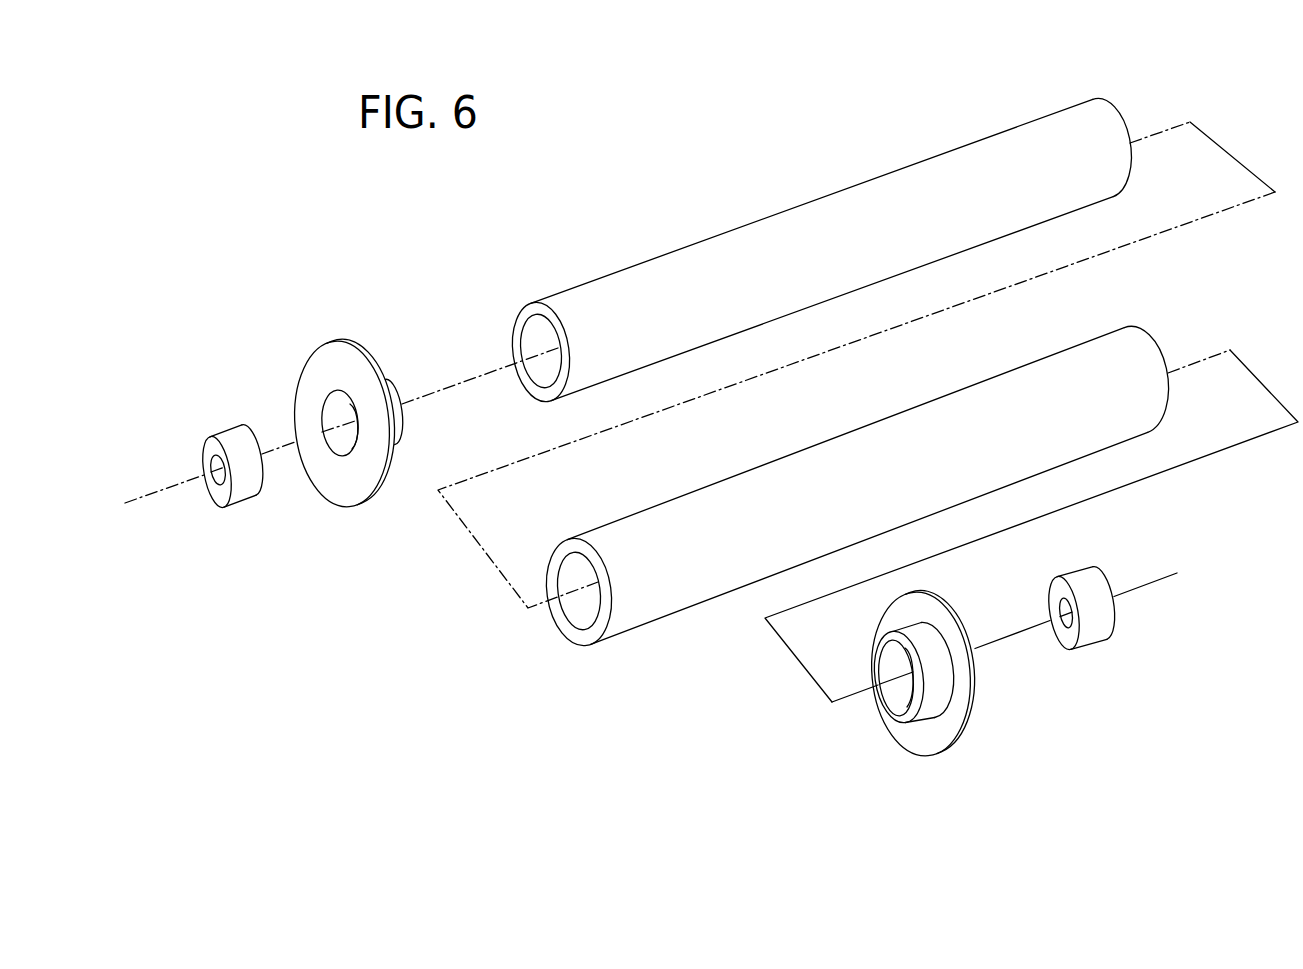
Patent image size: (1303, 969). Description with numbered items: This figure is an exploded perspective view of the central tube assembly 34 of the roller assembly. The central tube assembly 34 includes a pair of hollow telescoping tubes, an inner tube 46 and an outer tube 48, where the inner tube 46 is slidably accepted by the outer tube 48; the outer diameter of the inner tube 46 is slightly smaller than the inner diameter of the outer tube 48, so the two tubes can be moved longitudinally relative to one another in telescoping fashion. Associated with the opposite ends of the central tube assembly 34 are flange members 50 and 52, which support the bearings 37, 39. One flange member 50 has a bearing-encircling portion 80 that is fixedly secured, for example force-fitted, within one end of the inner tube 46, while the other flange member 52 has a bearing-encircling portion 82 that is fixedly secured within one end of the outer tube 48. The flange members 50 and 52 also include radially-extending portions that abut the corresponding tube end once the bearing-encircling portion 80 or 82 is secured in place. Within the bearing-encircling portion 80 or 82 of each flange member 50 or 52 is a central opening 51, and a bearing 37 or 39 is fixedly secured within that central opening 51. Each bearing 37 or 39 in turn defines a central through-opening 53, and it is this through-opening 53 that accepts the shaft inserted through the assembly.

The central tube assembly 34 is at (711, 360).
The inner tube 46 is at (767, 237).
The outer tube 48 is at (1138, 373).
The flange member 50 is at (342, 340).
The flange member 52 is at (913, 592).
The central opening 51 is at (335, 407).
The bearing-encircling portion 80 is at (404, 421).
The bearing-encircling portion 82 is at (932, 698).
The bearing 37 is at (237, 432).
The bearing 39 is at (1095, 637).
The central through-opening 53 is at (215, 480).